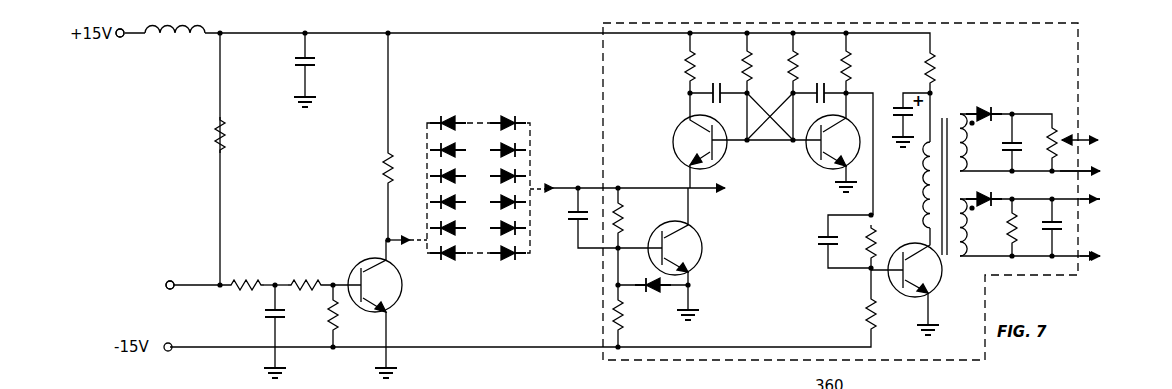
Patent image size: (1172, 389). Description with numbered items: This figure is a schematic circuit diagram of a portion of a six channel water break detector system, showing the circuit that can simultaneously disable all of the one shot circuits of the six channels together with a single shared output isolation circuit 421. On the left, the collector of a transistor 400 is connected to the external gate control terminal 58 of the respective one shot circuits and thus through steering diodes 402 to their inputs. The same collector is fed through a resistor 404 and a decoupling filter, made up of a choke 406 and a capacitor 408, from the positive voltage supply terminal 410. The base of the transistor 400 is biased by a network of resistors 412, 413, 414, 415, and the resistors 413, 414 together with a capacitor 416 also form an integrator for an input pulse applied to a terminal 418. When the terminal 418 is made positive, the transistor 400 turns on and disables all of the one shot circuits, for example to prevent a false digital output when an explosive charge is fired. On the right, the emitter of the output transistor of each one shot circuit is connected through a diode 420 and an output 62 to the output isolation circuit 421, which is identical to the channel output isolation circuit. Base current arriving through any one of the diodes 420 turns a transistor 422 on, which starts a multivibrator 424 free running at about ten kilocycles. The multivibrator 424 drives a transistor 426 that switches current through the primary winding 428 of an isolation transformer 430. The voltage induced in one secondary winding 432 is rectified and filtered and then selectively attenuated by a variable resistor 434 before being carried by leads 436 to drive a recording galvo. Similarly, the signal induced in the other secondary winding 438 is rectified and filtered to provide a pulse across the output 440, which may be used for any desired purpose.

The choke 406 is at (180, 28).
The positive voltage supply terminal 410 is at (121, 38).
The capacitor 408 is at (317, 64).
The resistor 412 is at (223, 125).
The terminal 418 is at (170, 281).
The resistor 413 is at (246, 280).
The resistor 414 is at (308, 280).
The capacitor 416 is at (266, 314).
The resistor 415 is at (330, 316).
The transistor 400 is at (390, 300).
The resistor 404 is at (383, 165).
The external gate control terminal 58 is at (427, 131).
The steering diodes 402 is at (474, 109).
The diode 420 is at (532, 109).
The output 62 is at (530, 152).
The transistor 422 is at (702, 258).
The output isolation circuit 421 is at (1082, 50).
The multivibrator 424 is at (769, 147).
The transistor 426 is at (933, 283).
The primary winding 428 is at (927, 165).
The isolation transformer 430 is at (943, 118).
The secondary winding 432 is at (998, 142).
The variable resistor 434 is at (1055, 133).
The leads 436 is at (1097, 171).
The secondary winding 438 is at (996, 227).
The output 440 is at (1098, 255).